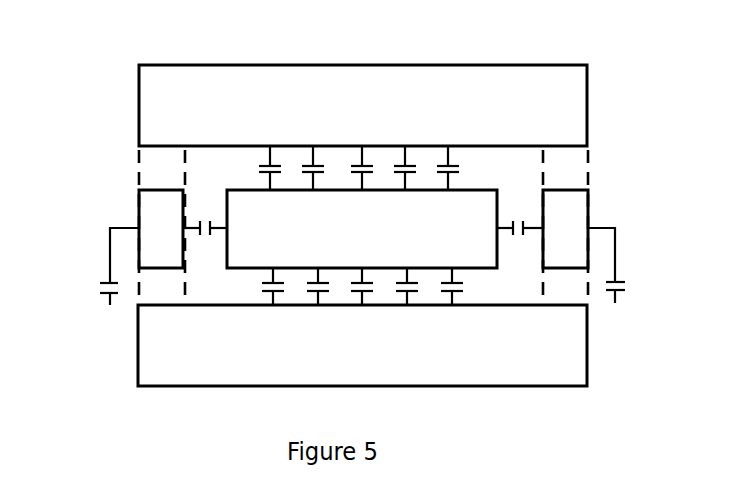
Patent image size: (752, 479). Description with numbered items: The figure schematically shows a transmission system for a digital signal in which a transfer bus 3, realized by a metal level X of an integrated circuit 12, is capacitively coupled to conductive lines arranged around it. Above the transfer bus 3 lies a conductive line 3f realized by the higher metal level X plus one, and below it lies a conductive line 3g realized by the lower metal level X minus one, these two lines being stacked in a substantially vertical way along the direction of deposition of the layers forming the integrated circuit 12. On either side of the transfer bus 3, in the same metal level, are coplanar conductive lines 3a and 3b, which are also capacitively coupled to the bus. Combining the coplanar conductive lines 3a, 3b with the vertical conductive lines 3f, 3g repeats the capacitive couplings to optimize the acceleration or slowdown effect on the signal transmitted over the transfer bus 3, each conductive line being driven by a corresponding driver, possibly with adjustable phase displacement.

The integrated circuit 12 is at (409, 75).
The conductive line 3f is at (568, 113).
The transfer bus 3 is at (250, 235).
The coplanar conductive line 3a is at (155, 247).
The coplanar conductive line 3b is at (568, 247).
The conductive line 3g is at (187, 335).